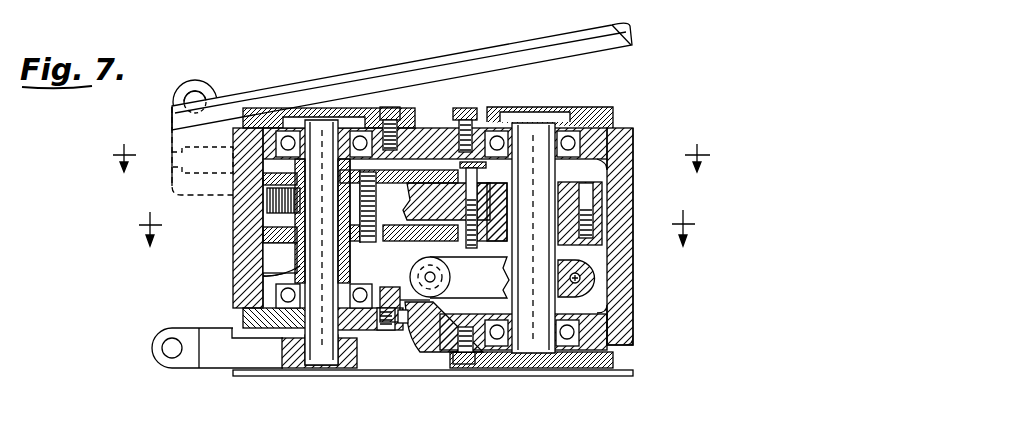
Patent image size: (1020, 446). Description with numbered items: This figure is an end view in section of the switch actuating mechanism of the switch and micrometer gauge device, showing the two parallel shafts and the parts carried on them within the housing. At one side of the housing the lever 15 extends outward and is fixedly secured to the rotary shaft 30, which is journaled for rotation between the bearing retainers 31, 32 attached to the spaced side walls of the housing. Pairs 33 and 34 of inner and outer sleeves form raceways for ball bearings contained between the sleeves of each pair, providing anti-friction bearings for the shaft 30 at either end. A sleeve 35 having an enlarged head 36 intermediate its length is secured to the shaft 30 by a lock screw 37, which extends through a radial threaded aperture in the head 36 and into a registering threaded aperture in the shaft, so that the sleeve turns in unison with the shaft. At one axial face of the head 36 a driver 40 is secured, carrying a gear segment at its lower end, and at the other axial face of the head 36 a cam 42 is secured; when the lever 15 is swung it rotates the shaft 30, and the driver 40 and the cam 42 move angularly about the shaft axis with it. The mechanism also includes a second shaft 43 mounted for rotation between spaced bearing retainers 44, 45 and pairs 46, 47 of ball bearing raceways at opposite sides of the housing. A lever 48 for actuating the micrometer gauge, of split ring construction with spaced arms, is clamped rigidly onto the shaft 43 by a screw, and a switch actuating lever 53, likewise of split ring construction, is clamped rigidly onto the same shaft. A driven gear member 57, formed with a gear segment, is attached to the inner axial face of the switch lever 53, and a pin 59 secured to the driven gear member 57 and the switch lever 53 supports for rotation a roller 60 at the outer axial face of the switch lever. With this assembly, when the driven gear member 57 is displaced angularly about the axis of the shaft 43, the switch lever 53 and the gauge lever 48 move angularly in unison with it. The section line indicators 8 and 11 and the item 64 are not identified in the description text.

The section line 11- 11 is at (413, 145).
The section line 8- 8 is at (417, 215).
The lever 15 is at (218, 368).
The rotary shaft 30 is at (323, 350).
The bearing retainer 31 is at (365, 330).
The bearing retainer 32 is at (262, 110).
The pair of inner and outer sleeves 33 is at (265, 298).
The pair of inner and outer sleeves 34 is at (288, 133).
The sleeve 35 is at (265, 272).
The enlarged head 36 is at (265, 230).
The lock screw 37 is at (270, 212).
The driver 40 is at (297, 247).
The cam 42 is at (410, 170).
The second shaft 43 is at (536, 348).
The bearing retainer 44 is at (585, 364).
The bearing retainer 45 is at (603, 108).
The pair of ball bearing raceways 46 is at (502, 347).
The pair of ball bearing raceways 47 is at (567, 134).
The lever 48 is at (590, 275).
The switch actuating lever 53 is at (410, 200).
The driven gear member 57 is at (450, 255).
The pin 59 is at (470, 246).
The roller 60 is at (458, 160).
The roller 64 is at (412, 272).